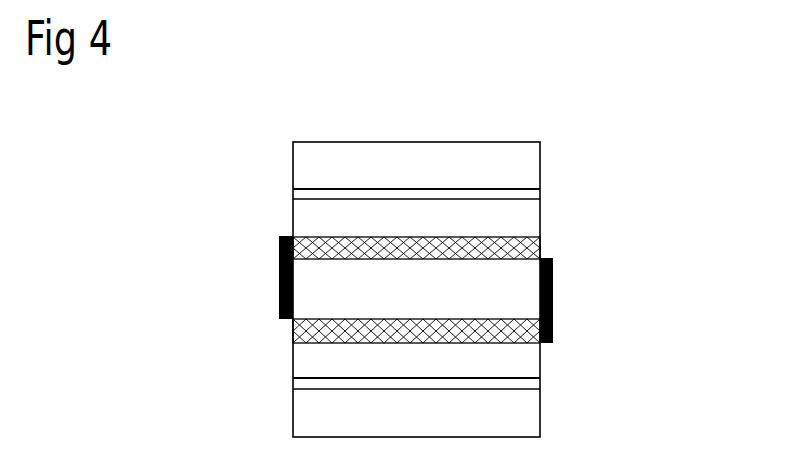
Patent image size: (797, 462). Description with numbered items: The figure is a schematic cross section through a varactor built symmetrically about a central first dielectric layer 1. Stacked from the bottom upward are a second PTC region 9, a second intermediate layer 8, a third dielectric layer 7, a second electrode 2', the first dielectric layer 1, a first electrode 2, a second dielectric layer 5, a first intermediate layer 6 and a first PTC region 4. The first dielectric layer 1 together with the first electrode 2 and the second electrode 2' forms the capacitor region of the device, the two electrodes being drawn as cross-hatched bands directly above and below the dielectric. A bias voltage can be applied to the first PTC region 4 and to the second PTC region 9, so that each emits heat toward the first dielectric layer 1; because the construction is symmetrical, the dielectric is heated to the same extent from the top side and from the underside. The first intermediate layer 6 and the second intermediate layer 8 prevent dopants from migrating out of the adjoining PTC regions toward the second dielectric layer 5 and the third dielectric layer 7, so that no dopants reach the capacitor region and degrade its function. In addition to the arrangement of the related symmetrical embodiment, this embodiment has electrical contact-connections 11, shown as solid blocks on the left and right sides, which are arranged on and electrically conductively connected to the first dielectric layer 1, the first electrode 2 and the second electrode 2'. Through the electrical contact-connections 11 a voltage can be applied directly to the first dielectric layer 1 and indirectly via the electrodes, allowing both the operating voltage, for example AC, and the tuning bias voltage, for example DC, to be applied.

The first dielectric layer 1 is at (332, 272).
The first electrode 2 is at (468, 253).
The second electrode 2' is at (472, 334).
The first PTC region 4 is at (517, 160).
The second dielectric layer 5 is at (517, 215).
The first intermediate layer 6 is at (532, 194).
The third dielectric layer 7 is at (520, 370).
The second intermediate layer 8 is at (523, 383).
The second PTC region 9 is at (517, 421).
The electrical contact-connections 11 is at (280, 288).